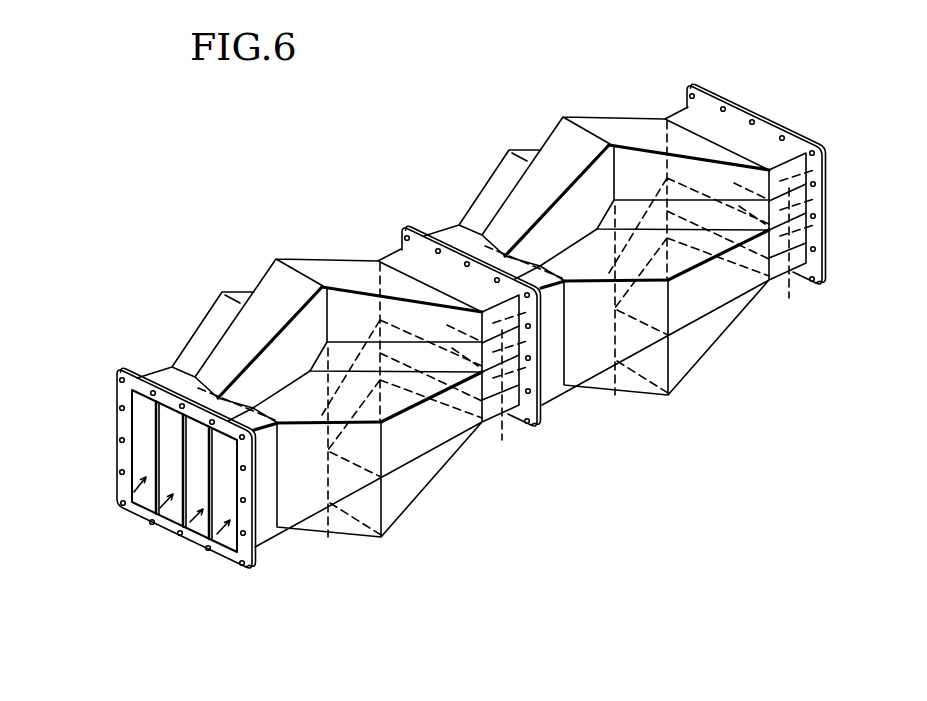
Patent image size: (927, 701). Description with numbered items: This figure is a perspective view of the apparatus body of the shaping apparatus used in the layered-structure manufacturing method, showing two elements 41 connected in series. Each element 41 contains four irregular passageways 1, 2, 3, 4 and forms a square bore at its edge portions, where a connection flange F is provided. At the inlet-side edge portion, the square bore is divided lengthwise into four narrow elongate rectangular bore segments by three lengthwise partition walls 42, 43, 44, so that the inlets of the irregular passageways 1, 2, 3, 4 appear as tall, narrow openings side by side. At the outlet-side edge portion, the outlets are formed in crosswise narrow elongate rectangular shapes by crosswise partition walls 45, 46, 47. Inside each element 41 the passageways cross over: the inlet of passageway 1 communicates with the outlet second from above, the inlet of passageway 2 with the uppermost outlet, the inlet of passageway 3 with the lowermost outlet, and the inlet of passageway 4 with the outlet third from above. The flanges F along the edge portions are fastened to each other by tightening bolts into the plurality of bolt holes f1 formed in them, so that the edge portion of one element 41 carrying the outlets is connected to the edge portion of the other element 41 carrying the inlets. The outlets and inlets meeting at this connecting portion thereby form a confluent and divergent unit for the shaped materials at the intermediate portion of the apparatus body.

The irregular passageway 1 is at (124, 505).
The irregular passageway 2 is at (147, 527).
The irregular passageway 3 is at (180, 532).
The irregular passageway 4 is at (228, 535).
The element 41 is at (325, 258).
The partition wall 42 is at (138, 523).
The partition wall 43 is at (163, 523).
The partition wall 44 is at (200, 542).
The partition wall 45 is at (505, 430).
The partition wall 46 is at (472, 400).
The partition wall 47 is at (457, 395).
The flange F is at (471, 333).
The bolt hole f1 is at (252, 558).